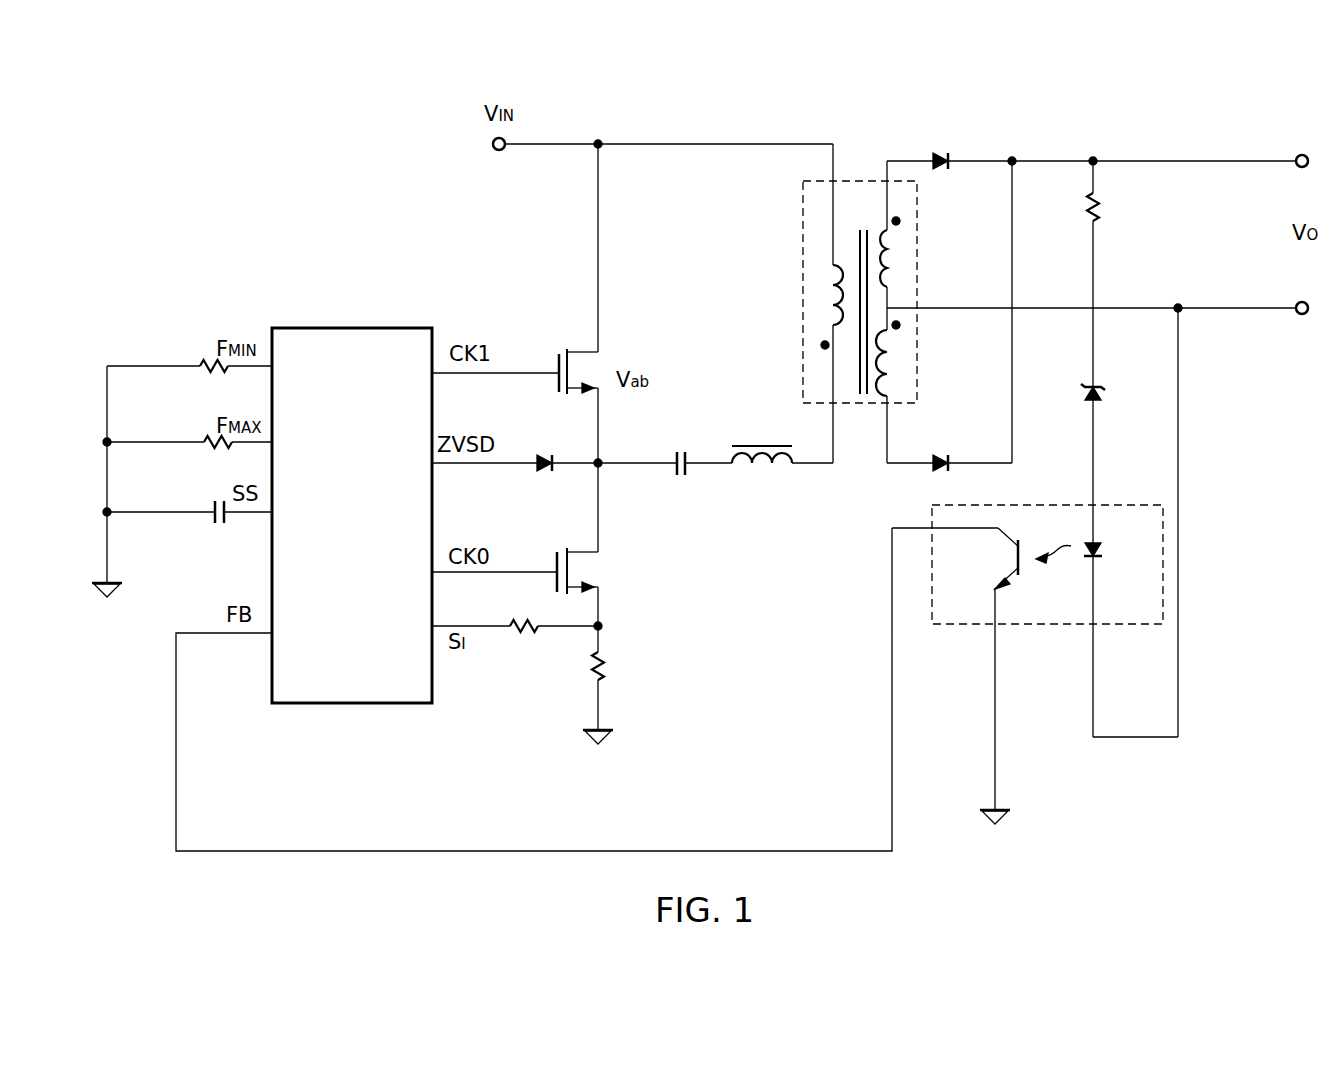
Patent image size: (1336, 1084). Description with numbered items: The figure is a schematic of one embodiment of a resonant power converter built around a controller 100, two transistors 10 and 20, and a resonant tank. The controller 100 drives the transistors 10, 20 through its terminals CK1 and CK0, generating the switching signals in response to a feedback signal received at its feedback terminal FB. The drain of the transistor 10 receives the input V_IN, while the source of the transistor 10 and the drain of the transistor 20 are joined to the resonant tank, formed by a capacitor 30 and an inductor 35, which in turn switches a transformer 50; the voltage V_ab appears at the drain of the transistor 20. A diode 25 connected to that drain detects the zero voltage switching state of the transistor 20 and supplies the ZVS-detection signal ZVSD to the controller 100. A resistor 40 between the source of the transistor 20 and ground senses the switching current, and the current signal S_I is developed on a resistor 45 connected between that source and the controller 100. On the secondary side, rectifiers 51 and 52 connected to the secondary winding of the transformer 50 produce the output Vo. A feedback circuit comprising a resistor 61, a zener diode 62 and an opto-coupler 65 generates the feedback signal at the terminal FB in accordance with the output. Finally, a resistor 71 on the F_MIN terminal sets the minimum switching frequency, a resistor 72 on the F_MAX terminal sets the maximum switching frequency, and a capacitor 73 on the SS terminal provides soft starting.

The controller 100 is at (338, 325).
The transistor 10 is at (569, 348).
The transistor 20 is at (560, 549).
The diode 25 is at (544, 458).
The capacitor 30 is at (680, 447).
The inductor 35 is at (762, 446).
The resistor 40 is at (606, 664).
The resistor 45 is at (530, 638).
The transformer 50 is at (857, 178).
The rectifier 51 is at (936, 151).
The rectifier 52 is at (937, 450).
The resistor 61 is at (1112, 202).
The zener diode 62 is at (1110, 384).
The opto-coupler 65 is at (1052, 635).
The resistor 71 is at (196, 362).
The resistor 72 is at (200, 436).
The capacitor 73 is at (208, 502).